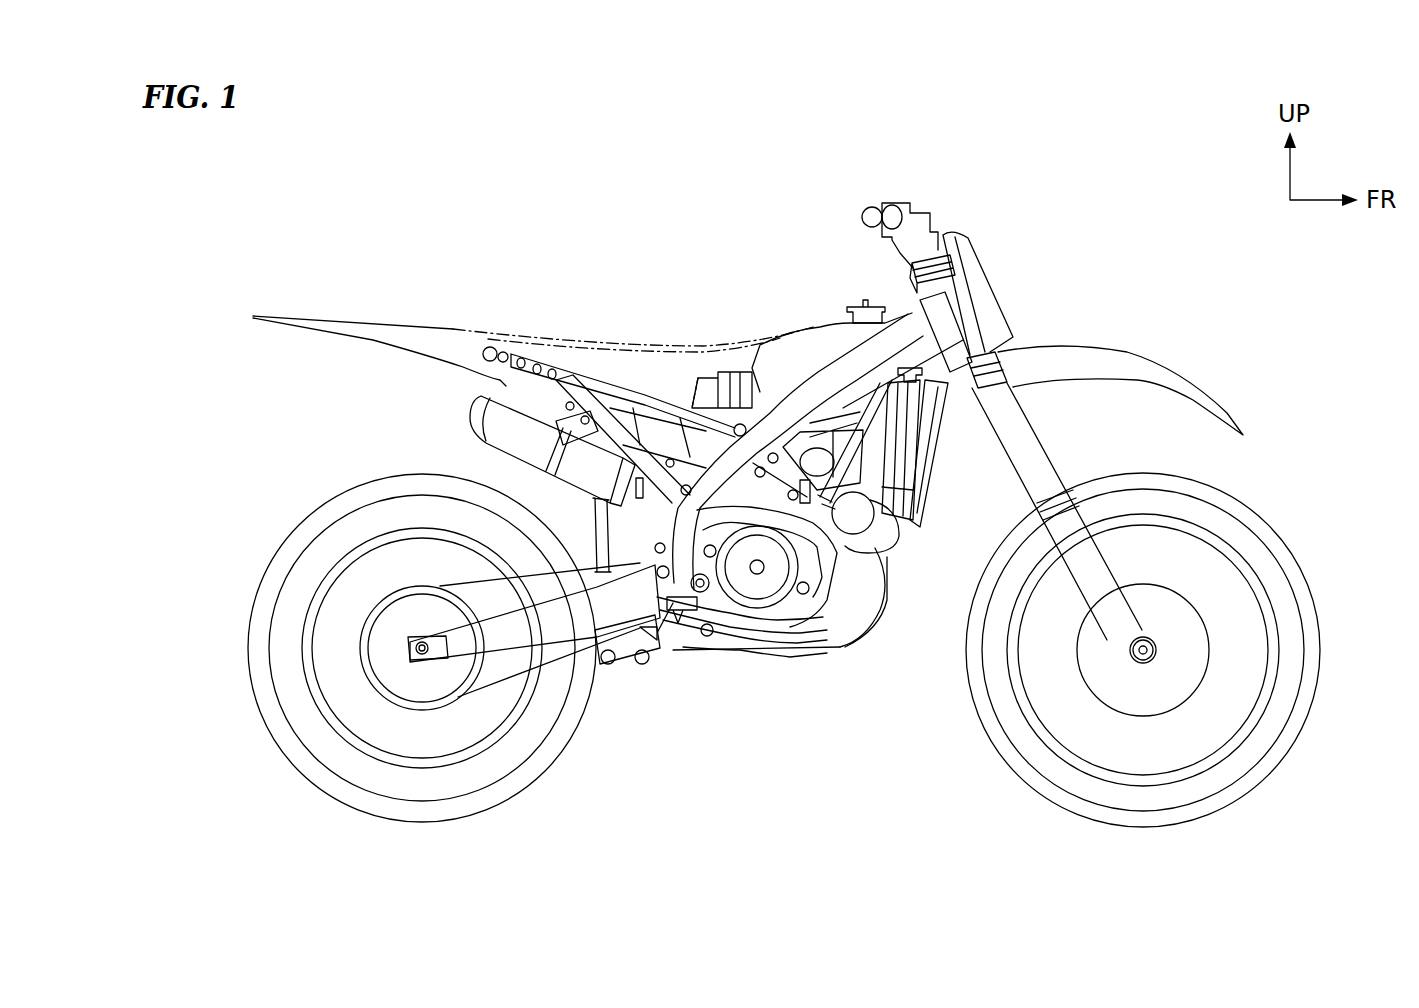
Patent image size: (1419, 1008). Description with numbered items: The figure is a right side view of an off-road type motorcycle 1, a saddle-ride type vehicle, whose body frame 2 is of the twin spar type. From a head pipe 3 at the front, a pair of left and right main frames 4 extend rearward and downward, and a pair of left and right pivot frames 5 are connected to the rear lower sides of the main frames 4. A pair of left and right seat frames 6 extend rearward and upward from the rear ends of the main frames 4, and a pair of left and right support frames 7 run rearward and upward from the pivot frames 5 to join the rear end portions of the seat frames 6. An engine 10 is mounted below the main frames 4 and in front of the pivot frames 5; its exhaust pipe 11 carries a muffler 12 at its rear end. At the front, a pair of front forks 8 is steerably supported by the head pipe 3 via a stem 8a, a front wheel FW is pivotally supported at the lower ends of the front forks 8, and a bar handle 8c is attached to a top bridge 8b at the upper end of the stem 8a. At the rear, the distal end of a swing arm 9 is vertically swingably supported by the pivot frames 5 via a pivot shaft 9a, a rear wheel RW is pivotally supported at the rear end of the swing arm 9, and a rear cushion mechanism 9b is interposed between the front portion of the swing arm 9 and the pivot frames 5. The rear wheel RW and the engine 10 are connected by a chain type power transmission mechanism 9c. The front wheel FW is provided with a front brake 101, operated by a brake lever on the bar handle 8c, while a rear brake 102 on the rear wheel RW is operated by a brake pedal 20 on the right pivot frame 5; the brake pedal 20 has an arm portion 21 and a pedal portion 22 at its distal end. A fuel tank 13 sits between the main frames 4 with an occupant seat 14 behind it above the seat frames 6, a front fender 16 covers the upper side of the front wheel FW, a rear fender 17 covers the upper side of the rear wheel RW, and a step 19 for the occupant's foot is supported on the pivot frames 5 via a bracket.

The motorcycle 1 is at (1030, 176).
The body frame 2 is at (816, 364).
The head pipe 3 is at (958, 360).
The main frame 4 is at (847, 383).
The pivot frame 5 is at (677, 582).
The seat frame 6 is at (645, 398).
The support frame 7 is at (608, 428).
The front fork 8 is at (1032, 448).
The stem 8a is at (992, 358).
The top bridge 8b is at (947, 260).
The bar handle 8c is at (889, 216).
The swing arm 9 is at (563, 618).
The pivot shaft 9a is at (700, 592).
The rear cushion mechanism 9b is at (626, 668).
The chain type power transmission mechanism 9c is at (460, 573).
The engine 10 is at (810, 632).
The exhaust pipe 11 is at (845, 545).
The muffler 12 is at (482, 412).
The fuel tank 13 is at (830, 330).
The occupant seat 14 is at (695, 345).
The front fender 16 is at (1165, 375).
The rear fender 17 is at (357, 322).
The step 19 is at (683, 595).
The brake pedal 20 is at (747, 632).
The arm portion 21 is at (780, 612).
The pedal portion 22 is at (760, 622).
The front brake 101 is at (1190, 697).
The rear brake 102 is at (408, 693).
The rear wheel RW is at (273, 568).
The front wheel FW is at (1287, 557).